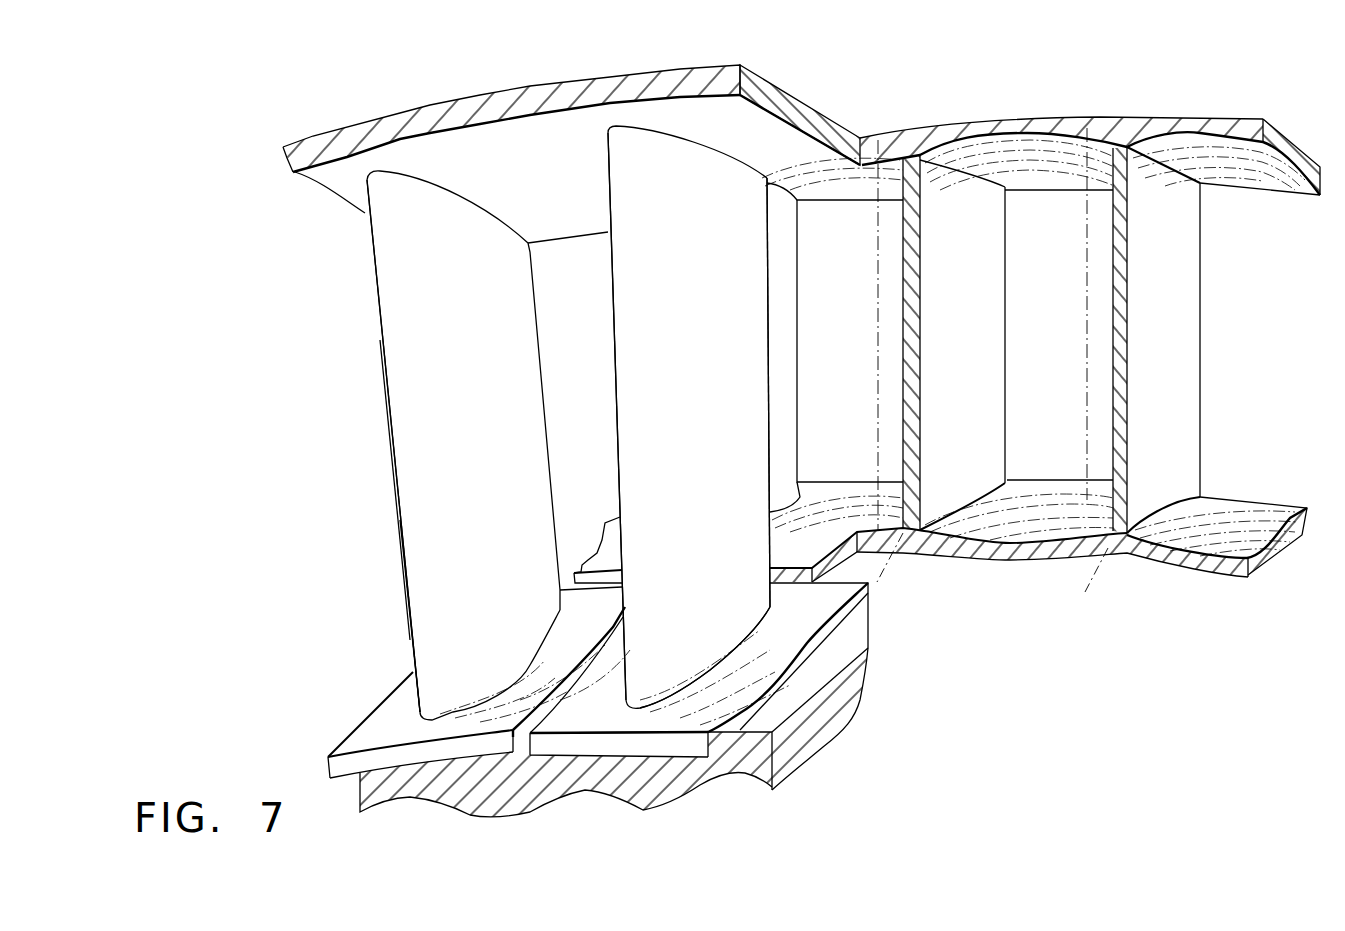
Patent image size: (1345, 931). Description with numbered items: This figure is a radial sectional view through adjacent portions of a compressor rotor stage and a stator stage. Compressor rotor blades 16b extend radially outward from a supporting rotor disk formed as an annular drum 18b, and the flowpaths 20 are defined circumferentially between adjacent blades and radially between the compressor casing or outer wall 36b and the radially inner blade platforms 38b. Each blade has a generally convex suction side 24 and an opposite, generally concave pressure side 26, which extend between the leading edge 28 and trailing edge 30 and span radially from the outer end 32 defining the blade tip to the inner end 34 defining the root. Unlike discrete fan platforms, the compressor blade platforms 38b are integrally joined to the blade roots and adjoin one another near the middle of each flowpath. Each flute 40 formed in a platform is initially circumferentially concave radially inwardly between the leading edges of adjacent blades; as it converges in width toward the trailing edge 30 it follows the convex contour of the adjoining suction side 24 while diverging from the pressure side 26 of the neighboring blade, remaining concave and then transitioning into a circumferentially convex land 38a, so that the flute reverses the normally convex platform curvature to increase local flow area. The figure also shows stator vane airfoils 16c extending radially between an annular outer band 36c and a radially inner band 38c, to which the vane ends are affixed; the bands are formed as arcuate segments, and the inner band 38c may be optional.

The compressor rotor blade 16b is at (482, 445).
The stator vane airfoil 16c is at (1173, 360).
The annular drum 18b is at (832, 720).
The flowpath 20 is at (586, 418).
The suction side 24 is at (402, 568).
The pressure side 26 is at (430, 495).
The leading edge 28 is at (368, 262).
The trailing edge 30 is at (770, 290).
The radially outer end 32 is at (723, 147).
The inner end 34 is at (703, 670).
The compressor casing 36b is at (497, 126).
The outer band 36c is at (1233, 121).
The land 38a is at (577, 610).
The compressor blade platform 38b is at (837, 588).
The inner band 38c is at (1217, 568).
The flute 40 is at (1208, 163).